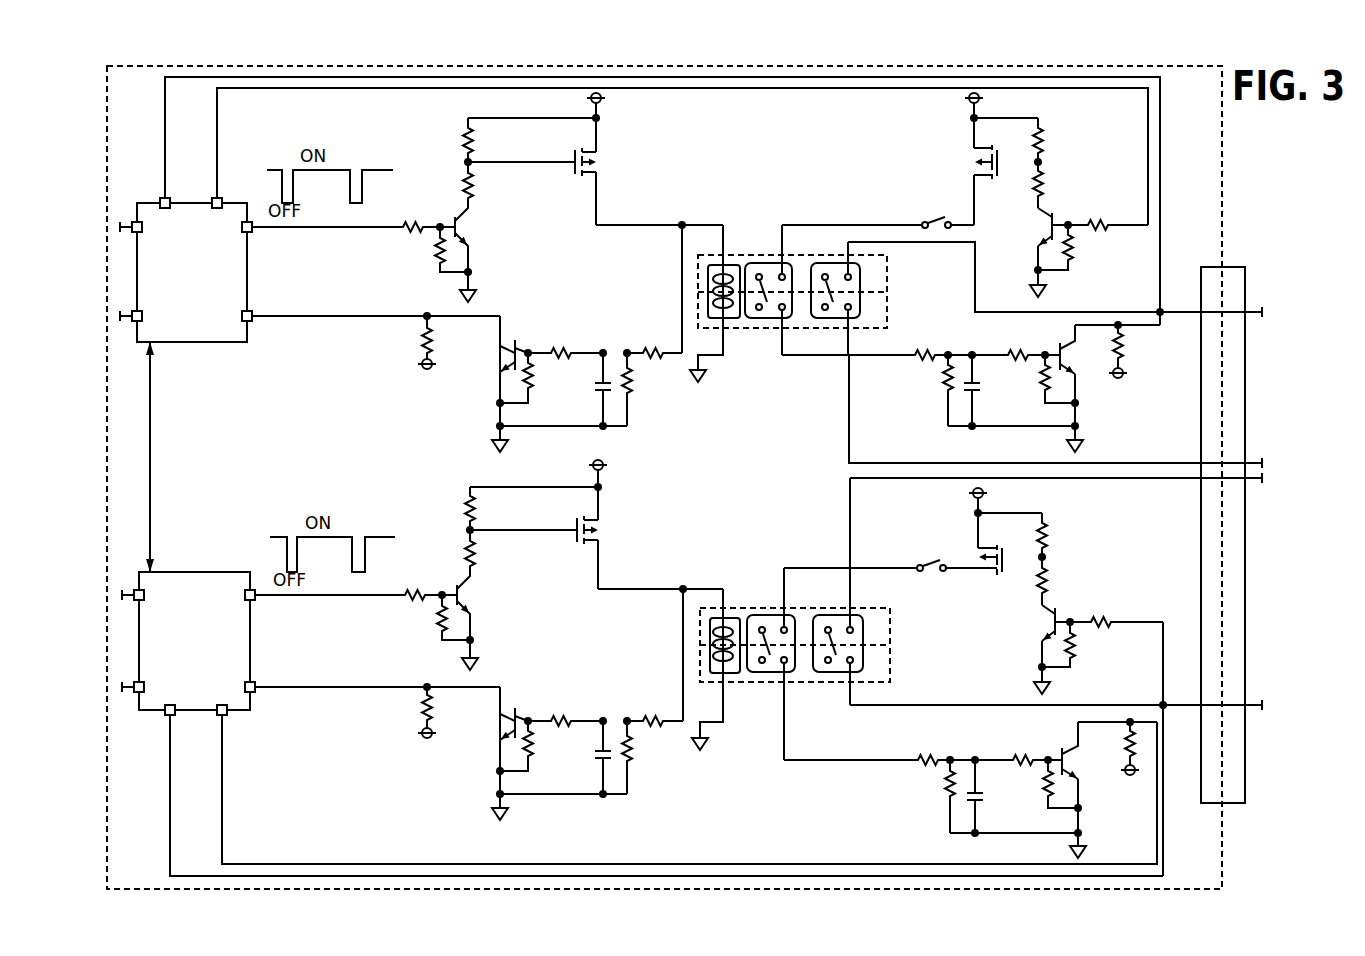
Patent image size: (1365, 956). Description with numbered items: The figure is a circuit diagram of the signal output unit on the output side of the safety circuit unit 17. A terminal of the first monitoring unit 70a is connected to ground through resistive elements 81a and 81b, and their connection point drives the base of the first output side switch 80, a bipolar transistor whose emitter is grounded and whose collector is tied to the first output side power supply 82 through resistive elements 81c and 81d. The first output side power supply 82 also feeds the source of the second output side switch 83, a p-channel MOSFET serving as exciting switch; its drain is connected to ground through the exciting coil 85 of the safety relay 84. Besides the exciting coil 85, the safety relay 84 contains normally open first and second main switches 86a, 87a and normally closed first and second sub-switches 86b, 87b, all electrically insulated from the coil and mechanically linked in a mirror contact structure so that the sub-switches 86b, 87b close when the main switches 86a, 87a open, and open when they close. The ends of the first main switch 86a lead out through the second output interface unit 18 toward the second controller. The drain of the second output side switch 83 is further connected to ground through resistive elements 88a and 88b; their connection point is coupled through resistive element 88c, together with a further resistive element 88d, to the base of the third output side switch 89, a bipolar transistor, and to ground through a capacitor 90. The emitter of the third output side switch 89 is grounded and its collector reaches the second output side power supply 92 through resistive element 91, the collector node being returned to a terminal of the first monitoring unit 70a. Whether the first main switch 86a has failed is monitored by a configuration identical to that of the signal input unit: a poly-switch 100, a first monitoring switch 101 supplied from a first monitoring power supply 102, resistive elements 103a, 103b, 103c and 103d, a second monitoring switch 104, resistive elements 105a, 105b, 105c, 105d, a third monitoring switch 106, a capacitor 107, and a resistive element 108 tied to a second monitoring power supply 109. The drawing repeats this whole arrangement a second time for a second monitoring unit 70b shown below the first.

The safety circuit unit 17 is at (1223, 140).
The second output interface unit 18 is at (1232, 267).
The first monitoring unit 70a is at (232, 342).
The second monitoring unit 70b is at (232, 572).
The first output side switch 80 is at (476, 228).
The resistive element 81a is at (416, 224).
The resistive element 81b is at (436, 260).
The resistive element 81c is at (473, 196).
The resistive element 81d is at (473, 153).
The first output side power supply 82 is at (602, 101).
The second output side switch 83 is at (608, 159).
The safety relay 84 is at (889, 262).
The exciting coil 85 is at (732, 264).
The first main switch 86a is at (860, 295).
The first sub-switch 86b is at (838, 298).
The second main switch 87a is at (795, 298).
The second sub-switch 87b is at (766, 312).
The resistive element 88a is at (649, 350).
The resistive element 88b is at (631, 390).
The resistive element 88c is at (563, 350).
The resistor 88d is at (534, 384).
The third output side switch 89 is at (512, 350).
The capacitor 90 is at (598, 388).
The resistive element 91 is at (424, 349).
The second output side power supply 92 is at (421, 368).
The poly-switch 100 is at (932, 220).
The first monitoring switch 101 is at (984, 162).
The first monitoring power supply 102 is at (969, 98).
The resistive element 103a is at (1041, 137).
The resistive element 103b is at (1041, 181).
The resistive element 103c is at (1071, 255).
The resistor 103d is at (1106, 221).
The second monitoring switch 104 is at (1050, 222).
The resistive element 105a is at (928, 353).
The resistive element 105b is at (949, 390).
The resistive element 105c is at (1020, 353).
The resistive element 105d is at (1046, 385).
The third monitoring switch 106 is at (1080, 362).
The capacitor 107 is at (981, 391).
The resistive element 108 is at (1121, 356).
The second monitoring power supply 109 is at (1125, 378).